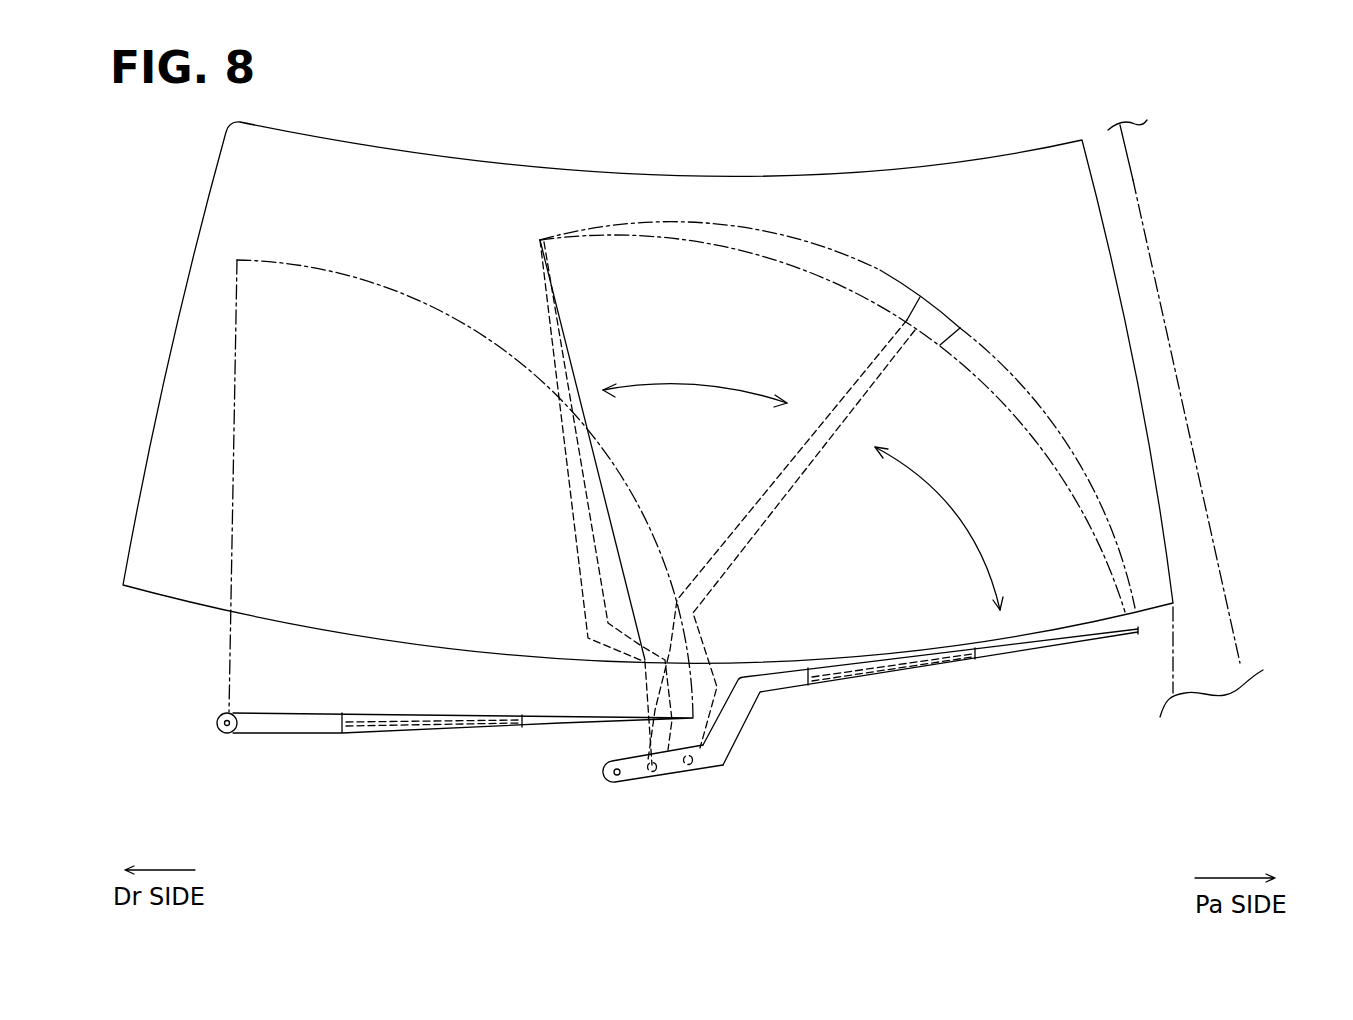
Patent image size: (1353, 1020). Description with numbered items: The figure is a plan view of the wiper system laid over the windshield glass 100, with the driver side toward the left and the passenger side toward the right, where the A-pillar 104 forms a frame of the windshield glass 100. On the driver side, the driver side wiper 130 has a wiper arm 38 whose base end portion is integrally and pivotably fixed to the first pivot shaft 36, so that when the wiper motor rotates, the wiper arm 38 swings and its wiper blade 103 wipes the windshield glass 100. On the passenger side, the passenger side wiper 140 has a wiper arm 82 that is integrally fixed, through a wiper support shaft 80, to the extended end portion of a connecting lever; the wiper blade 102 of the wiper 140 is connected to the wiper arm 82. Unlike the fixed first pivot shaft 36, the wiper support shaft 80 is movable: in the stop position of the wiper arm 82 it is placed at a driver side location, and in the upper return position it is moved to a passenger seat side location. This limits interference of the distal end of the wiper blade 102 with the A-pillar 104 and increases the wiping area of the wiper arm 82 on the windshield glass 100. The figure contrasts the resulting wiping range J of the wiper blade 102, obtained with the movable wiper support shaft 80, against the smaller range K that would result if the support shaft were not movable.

The windshield glass 100 is at (886, 192).
The A-pillar 104 is at (1133, 298).
The wiper blade 102 is at (993, 651).
The wiper arm 82 is at (752, 685).
The passenger side wiper 140 is at (859, 744).
The wiper support shaft 80 is at (610, 775).
The first pivot shaft 36 is at (226, 735).
The wiper arm 38 is at (308, 730).
The wiper blade 103 is at (447, 768).
The driver side wiper 130 is at (446, 784).
The range J is at (880, 267).
The range K is at (967, 330).